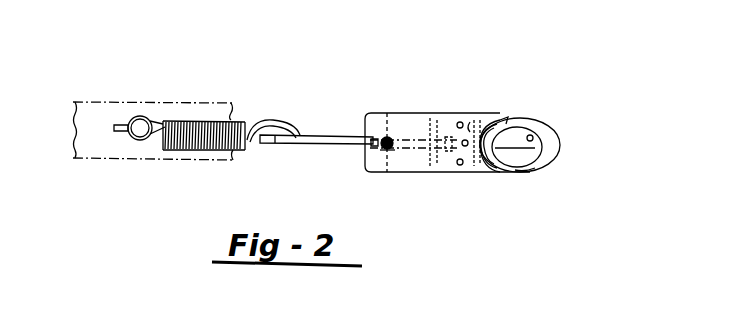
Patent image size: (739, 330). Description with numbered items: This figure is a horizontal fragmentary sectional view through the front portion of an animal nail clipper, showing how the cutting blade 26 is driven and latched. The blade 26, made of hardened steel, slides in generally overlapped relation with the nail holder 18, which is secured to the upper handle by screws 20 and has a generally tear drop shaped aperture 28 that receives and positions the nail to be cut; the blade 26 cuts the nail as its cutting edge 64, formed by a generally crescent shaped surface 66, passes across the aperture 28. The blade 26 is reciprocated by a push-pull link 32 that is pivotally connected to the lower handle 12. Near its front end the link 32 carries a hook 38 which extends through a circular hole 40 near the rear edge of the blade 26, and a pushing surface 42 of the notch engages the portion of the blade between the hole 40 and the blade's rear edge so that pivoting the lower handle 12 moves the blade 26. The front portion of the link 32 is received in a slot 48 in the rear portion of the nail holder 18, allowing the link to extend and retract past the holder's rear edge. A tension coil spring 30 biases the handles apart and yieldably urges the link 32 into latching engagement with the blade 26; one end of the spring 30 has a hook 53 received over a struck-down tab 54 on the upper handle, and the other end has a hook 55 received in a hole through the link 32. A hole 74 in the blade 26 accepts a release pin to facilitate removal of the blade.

The first or lower handle 12 is at (100, 158).
The nail holder 18 is at (552, 163).
The screws 20 is at (472, 120).
The cutting blade 26 is at (450, 113).
The tear drop shaped aperture 28 is at (532, 138).
The tension coil spring 30 is at (203, 120).
The push-pull link 32 is at (330, 135).
The hook 38 is at (385, 157).
The circular hole 40 is at (400, 150).
The pushing surface 42 is at (375, 145).
The slot 48 is at (415, 140).
The hook 53 is at (142, 115).
The struck-down tab 54 is at (114, 126).
The hook 55 is at (287, 117).
The cutting edge 64 is at (535, 168).
The crescent shaped surface 66 is at (490, 173).
The hole 74 is at (468, 140).